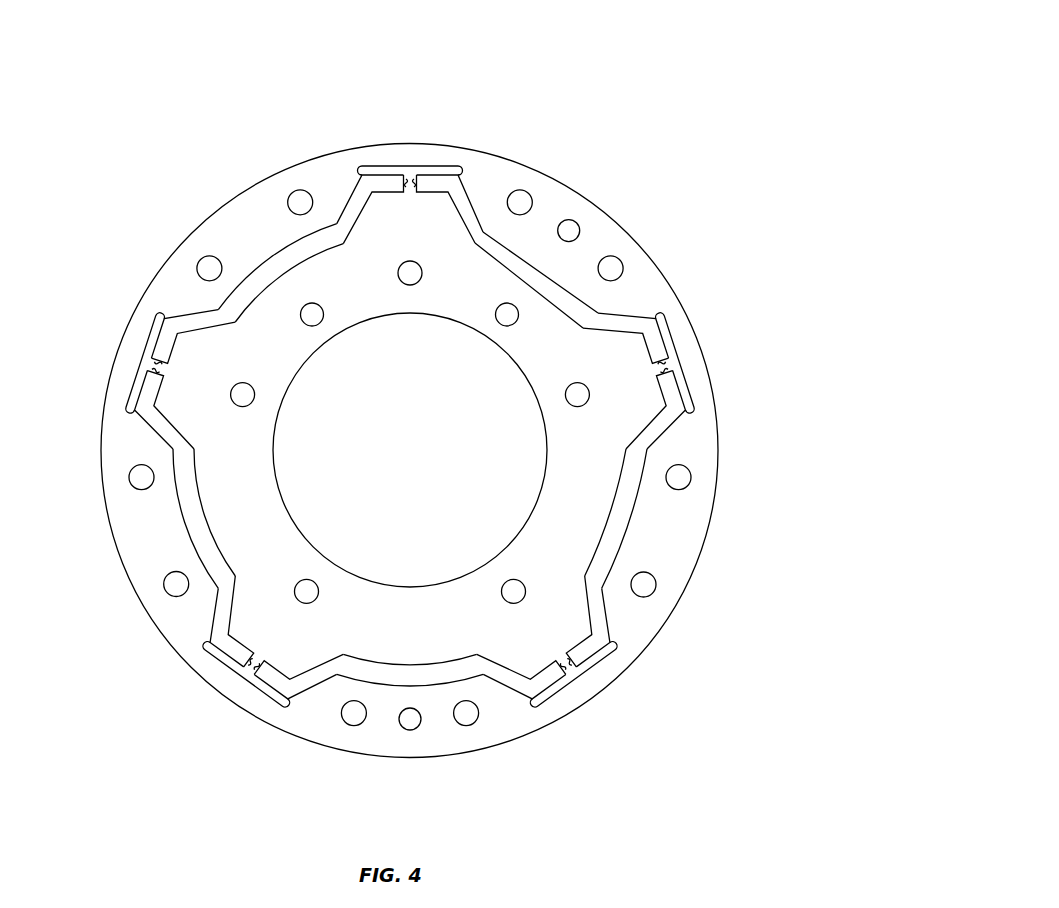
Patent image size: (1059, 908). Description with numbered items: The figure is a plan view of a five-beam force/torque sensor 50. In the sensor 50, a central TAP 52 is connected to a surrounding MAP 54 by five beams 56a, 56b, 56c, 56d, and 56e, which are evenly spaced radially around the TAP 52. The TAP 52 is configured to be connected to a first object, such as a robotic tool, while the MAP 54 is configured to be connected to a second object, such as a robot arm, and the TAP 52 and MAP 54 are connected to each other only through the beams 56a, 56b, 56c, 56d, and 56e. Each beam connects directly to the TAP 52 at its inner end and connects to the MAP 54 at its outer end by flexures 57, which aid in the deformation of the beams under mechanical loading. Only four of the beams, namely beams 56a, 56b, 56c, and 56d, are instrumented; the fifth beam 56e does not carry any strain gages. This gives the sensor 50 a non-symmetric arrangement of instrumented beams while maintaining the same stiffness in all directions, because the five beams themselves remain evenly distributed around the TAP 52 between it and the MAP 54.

The force/torque sensor 50 is at (410, 417).
The TAP 52 is at (410, 455).
The MAP 54 is at (668, 533).
The beam 56a is at (408, 187).
The beam 56b is at (677, 362).
The beam 56c is at (578, 672).
The beam 56d is at (247, 666).
The beam 56e is at (143, 362).
The flexure 57 is at (688, 388).